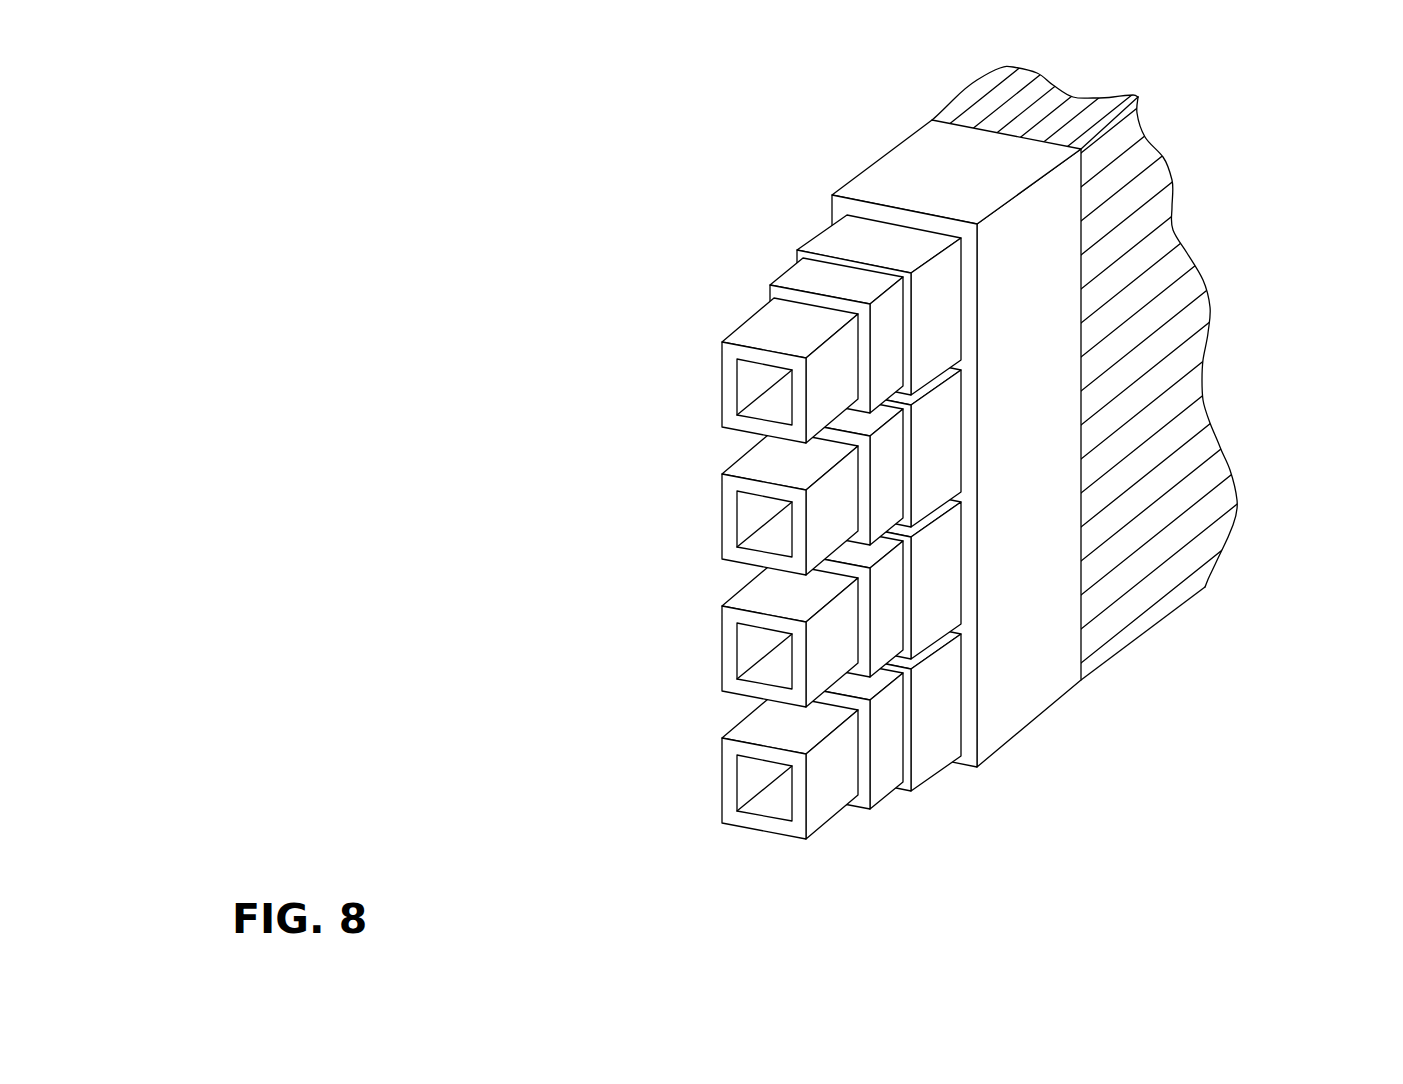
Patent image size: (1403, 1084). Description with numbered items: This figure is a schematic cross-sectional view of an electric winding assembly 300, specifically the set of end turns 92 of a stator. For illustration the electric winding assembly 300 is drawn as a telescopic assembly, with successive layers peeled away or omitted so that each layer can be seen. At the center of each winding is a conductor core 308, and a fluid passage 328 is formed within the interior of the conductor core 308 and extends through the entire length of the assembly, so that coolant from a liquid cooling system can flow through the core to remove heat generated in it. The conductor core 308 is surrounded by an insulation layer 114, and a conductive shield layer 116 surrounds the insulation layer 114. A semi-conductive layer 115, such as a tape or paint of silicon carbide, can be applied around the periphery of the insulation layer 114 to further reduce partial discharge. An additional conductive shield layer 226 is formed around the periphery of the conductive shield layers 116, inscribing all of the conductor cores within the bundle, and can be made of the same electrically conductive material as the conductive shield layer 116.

The electric winding assembly 300 is at (556, 92).
The set of end turns 92 is at (742, 246).
The semi-conductive layer 115 is at (1155, 632).
The additional conductive shield layer 226 is at (1048, 717).
The conductive shield layer 116 is at (937, 772).
The insulation layer 114 is at (887, 797).
The conductor core 308 is at (782, 790).
The fluid passage 328 is at (755, 813).